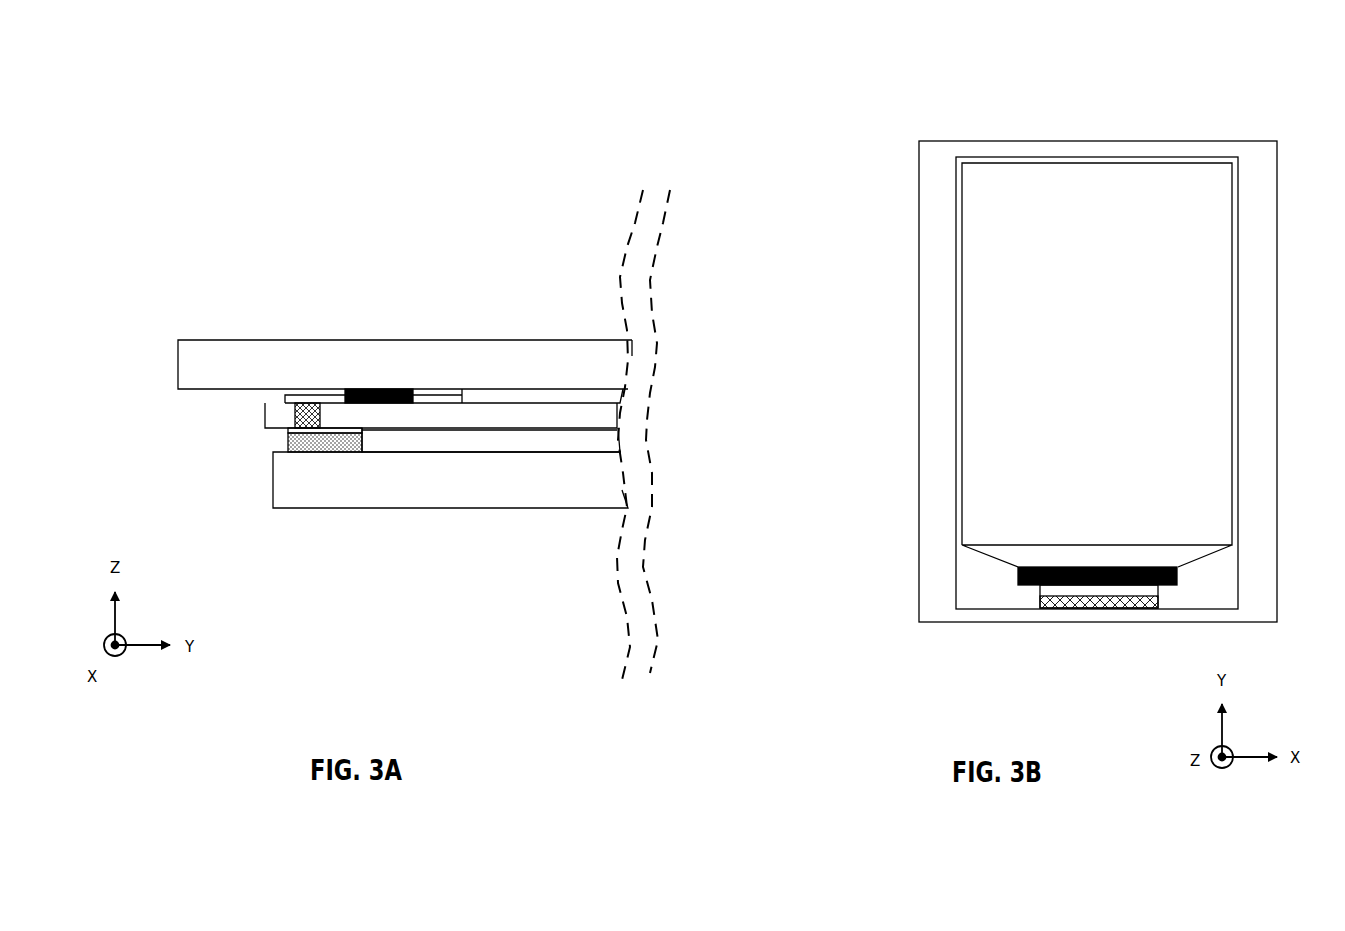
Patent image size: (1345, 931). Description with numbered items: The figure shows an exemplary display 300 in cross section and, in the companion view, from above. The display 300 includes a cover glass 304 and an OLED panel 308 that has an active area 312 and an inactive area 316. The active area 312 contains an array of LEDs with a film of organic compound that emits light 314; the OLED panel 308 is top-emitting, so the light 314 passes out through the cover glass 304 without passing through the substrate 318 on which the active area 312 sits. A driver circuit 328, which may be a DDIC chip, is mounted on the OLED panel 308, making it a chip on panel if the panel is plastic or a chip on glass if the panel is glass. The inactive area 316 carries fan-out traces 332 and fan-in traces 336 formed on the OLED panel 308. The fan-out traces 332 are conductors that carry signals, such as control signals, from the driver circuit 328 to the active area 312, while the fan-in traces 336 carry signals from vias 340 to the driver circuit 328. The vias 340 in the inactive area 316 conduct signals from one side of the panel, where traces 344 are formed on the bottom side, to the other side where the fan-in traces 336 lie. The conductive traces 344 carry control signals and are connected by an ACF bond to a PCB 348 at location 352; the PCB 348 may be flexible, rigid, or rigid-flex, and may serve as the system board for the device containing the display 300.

In FIG. 3A, the display 300 is at (98, 137).
In FIG. 3B, the display 300 is at (1248, 104).
In FIG. 3A, the cover glass 304 is at (218, 340).
In FIG. 3B, the cover glass 304 is at (927, 160).
In FIG. 3A, the OLED panel 308 is at (469, 430).
In FIG. 3A, the active area 312 is at (509, 389).
In FIG. 3B, the active area 312 is at (1065, 195).
In FIG. 3A, the light 314 is at (578, 388).
In FIG. 3A, the inactive area 316 is at (380, 420).
In FIG. 3B, the inactive area 316 is at (975, 575).
In FIG. 3A, the substrate 318 is at (570, 420).
In FIG. 3A, the driver circuit 328 is at (378, 392).
In FIG. 3B, the driver circuit 328 is at (1052, 567).
In FIG. 3A, the fan-out traces 332 is at (428, 395).
In FIG. 3B, the fan-out traces 332 is at (1167, 553).
In FIG. 3A, the fan-in traces 336 is at (331, 403).
In FIG. 3B, the fan-in traces 336 is at (1152, 592).
In FIG. 3A, the vias 340 is at (303, 403).
In FIG. 3A, the traces 344 is at (287, 430).
In FIG. 3A, the PCB 348 is at (313, 510).
In FIG. 3A, the location 352 is at (286, 452).